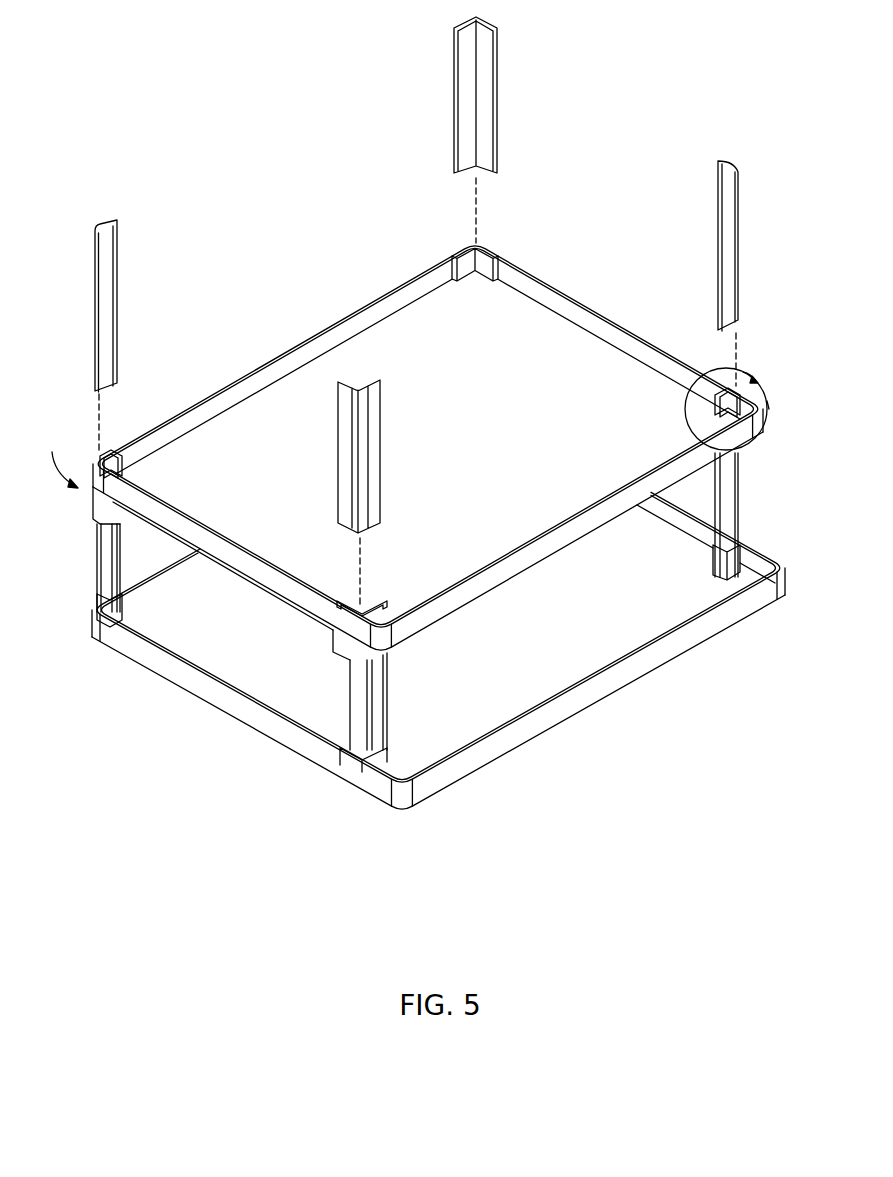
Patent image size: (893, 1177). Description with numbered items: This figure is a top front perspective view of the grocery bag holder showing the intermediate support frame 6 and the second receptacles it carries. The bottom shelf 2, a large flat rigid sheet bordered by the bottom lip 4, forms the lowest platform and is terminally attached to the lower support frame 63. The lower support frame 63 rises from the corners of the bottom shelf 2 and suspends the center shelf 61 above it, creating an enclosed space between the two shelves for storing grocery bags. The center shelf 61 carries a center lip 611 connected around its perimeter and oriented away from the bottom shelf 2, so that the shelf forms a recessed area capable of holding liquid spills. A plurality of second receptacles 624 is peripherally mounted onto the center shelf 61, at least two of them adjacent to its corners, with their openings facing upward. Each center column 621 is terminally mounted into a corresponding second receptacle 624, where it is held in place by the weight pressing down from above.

The bottom shelf 2 is at (538, 629).
The bottom lip 4 is at (224, 686).
The intermediate support frame 6 is at (408, 428).
The center shelf 61 is at (443, 436).
The center lip 611 is at (292, 346).
The center columns 621 is at (94, 306).
The second receptacles 624 is at (122, 462).
The lower support frame 63 is at (96, 553).